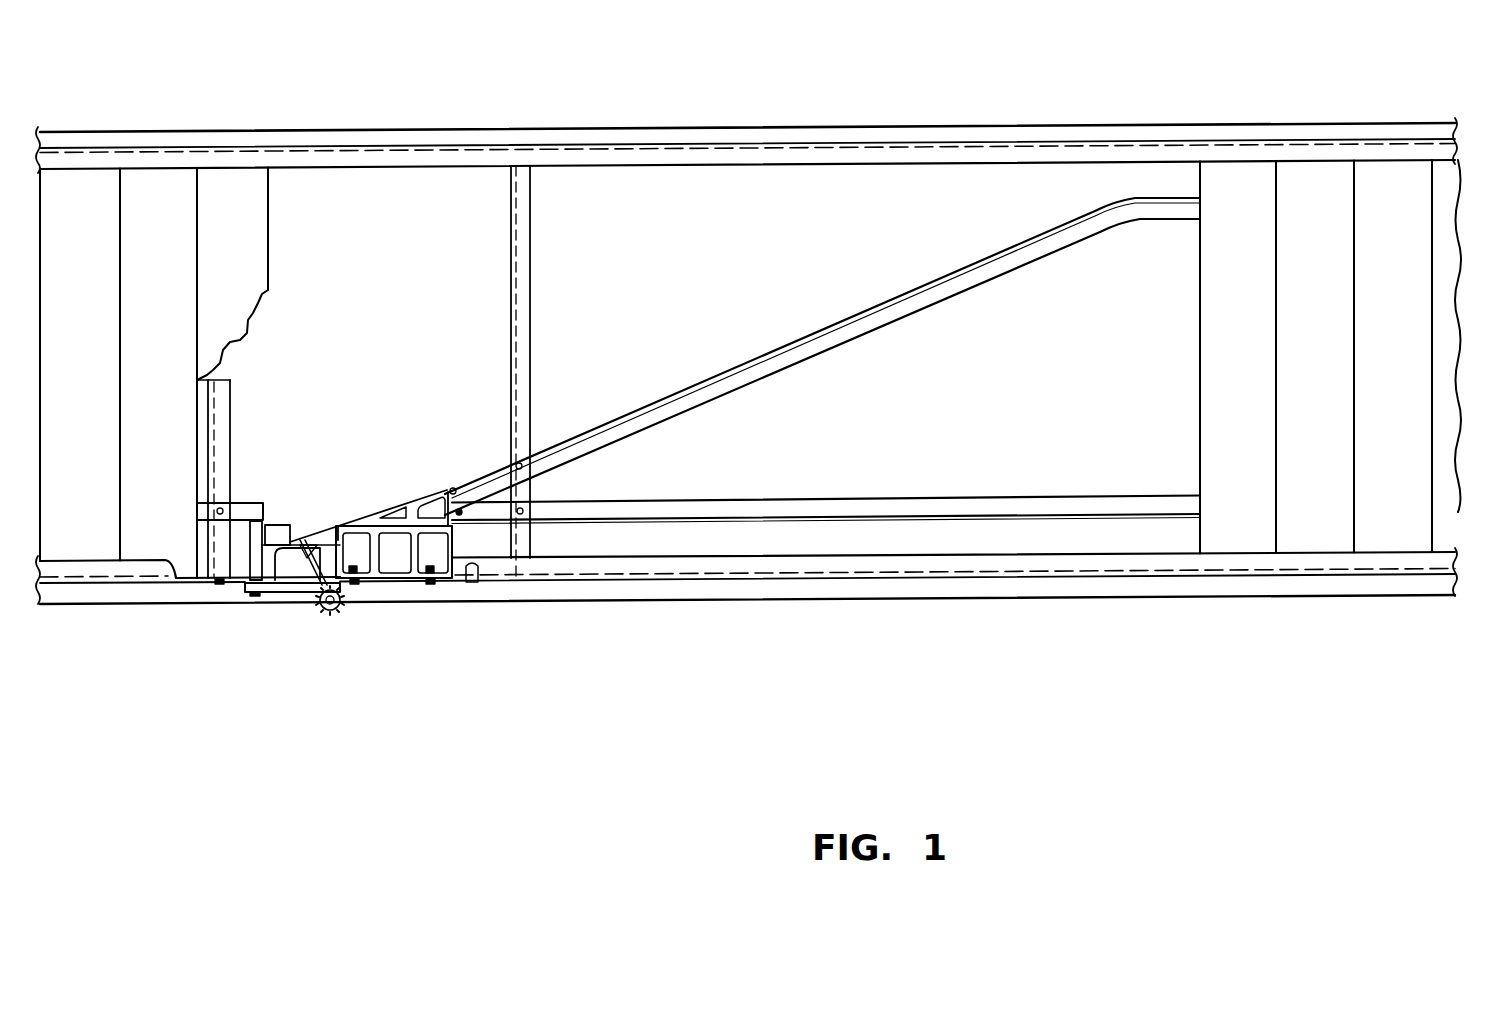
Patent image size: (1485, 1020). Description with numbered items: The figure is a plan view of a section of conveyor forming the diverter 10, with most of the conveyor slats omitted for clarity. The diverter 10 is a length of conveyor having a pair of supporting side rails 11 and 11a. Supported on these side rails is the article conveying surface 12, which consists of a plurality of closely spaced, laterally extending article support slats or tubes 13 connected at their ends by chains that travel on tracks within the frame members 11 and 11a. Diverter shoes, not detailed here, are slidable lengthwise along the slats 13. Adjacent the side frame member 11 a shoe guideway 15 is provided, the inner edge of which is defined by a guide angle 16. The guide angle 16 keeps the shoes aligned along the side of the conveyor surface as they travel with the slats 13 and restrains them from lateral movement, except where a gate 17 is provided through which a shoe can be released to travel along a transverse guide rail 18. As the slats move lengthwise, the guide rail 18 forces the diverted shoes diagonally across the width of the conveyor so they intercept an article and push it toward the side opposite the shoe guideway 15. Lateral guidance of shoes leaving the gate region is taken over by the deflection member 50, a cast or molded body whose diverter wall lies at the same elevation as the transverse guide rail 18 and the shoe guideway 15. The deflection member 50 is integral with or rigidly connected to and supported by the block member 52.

The diverter 10 is at (262, 740).
The side rail 11 is at (900, 598).
The side rail 11a is at (634, 127).
The article conveying surface 12 is at (158, 203).
The article support slats 13 is at (238, 195).
The shoe guideway 15 is at (657, 538).
The guide angle 16 is at (859, 500).
The gate 17 is at (308, 480).
The transverse guide rail 18 is at (871, 331).
The deflection member 50 is at (430, 495).
The block member 52 is at (453, 548).